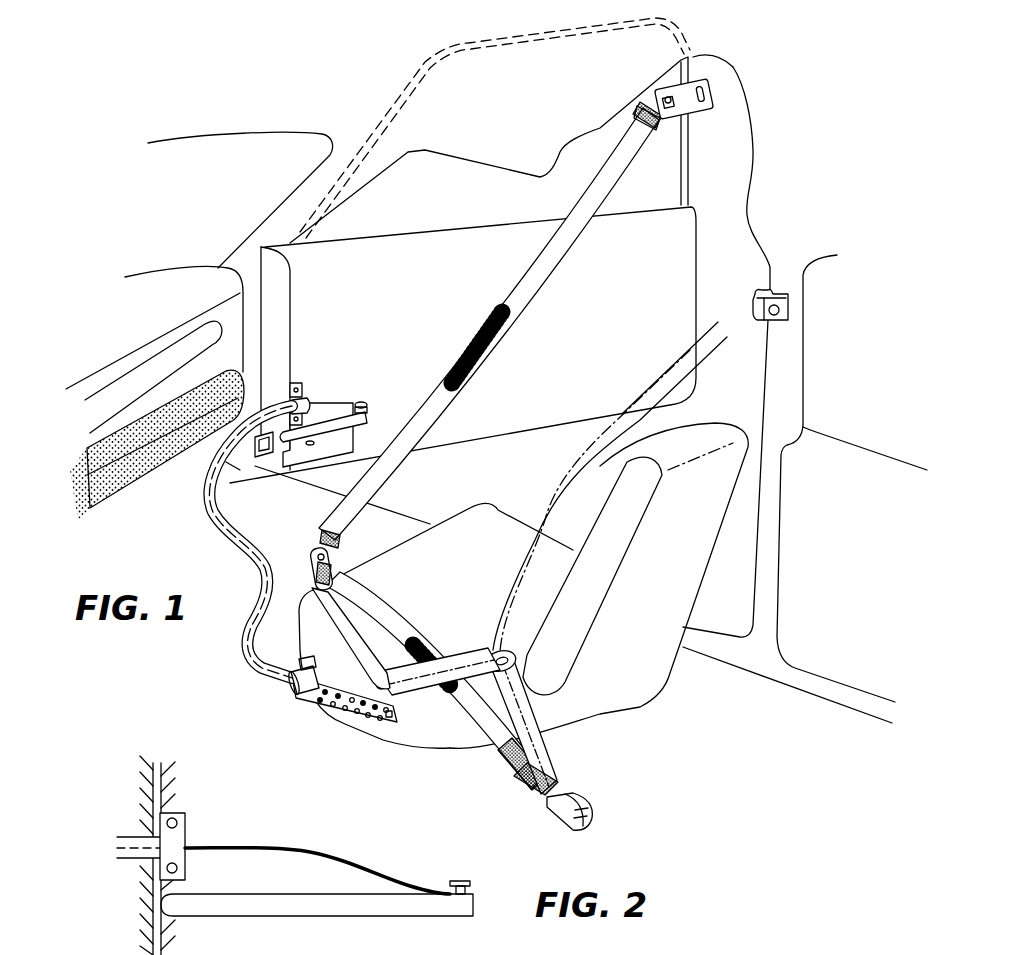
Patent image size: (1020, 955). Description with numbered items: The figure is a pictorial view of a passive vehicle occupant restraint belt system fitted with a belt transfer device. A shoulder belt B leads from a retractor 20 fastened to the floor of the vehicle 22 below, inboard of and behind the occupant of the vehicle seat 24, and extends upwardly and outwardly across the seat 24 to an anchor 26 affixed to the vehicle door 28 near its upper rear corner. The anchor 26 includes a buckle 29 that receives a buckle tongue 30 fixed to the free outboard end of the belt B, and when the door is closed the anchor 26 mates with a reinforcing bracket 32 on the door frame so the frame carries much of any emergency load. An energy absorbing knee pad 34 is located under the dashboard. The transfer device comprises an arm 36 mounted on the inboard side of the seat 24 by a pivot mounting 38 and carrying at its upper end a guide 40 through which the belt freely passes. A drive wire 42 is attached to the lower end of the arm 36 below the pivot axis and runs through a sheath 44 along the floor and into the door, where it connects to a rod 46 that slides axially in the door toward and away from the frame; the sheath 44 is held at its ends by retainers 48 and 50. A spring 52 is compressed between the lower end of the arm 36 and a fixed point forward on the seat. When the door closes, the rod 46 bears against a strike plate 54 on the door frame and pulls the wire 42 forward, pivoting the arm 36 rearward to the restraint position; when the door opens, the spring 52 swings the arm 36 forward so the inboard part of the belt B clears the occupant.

In FIG. 1, the retractor 20 is at (593, 803).
In FIG. 1, the vehicle 22 is at (860, 589).
In FIG. 1, the vehicle seat 24 is at (666, 594).
In FIG. 1, the anchor 26 is at (711, 82).
In FIG. 1, the vehicle door 28 is at (600, 359).
In FIG. 1, the buckle 29 is at (662, 98).
In FIG. 1, the buckle tongue 30 is at (640, 110).
In FIG. 1, the reinforcing bracket 32 is at (770, 295).
In FIG. 1, the energy absorbing knee pad 34 is at (132, 483).
In FIG. 1, the arm 36 is at (343, 627).
In FIG. 1, the pivot mounting 38 is at (387, 689).
In FIG. 1, the guide 40 is at (318, 557).
In FIG. 1, the drive wire 42 is at (333, 405).
In FIG. 2, the drive wire 42 is at (373, 875).
In FIG. 1, the sheath 44 is at (248, 636).
In FIG. 2, the sheath 44 is at (132, 860).
In FIG. 1, the rod 46 is at (328, 430).
In FIG. 2, the rod 46 is at (373, 912).
In FIG. 1, the retainer 48 is at (293, 700).
In FIG. 1, the retainer 50 is at (303, 383).
In FIG. 2, the retainer 50 is at (185, 828).
In FIG. 1, the spring 52 is at (355, 684).
In FIG. 1, the strike plate 54 is at (230, 475).
In FIG. 2, the strike plate 54 is at (155, 915).
In FIG. 1, the shoulder belt B is at (546, 268).